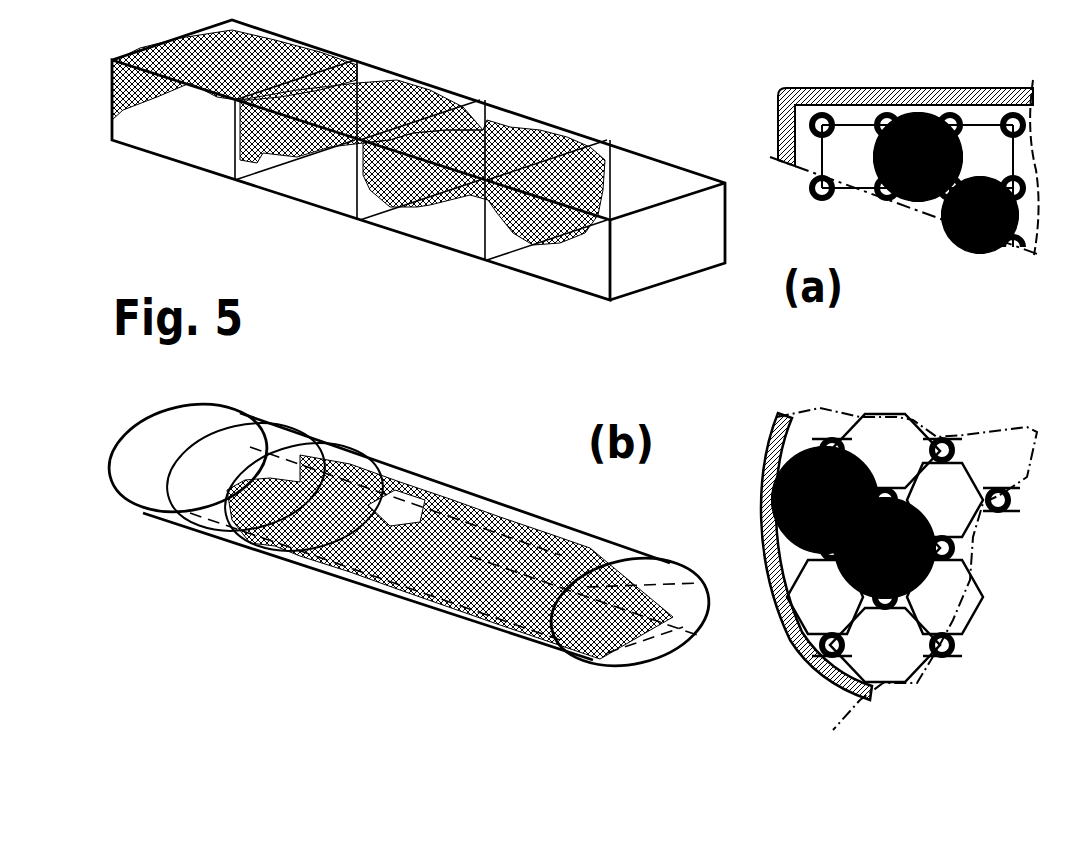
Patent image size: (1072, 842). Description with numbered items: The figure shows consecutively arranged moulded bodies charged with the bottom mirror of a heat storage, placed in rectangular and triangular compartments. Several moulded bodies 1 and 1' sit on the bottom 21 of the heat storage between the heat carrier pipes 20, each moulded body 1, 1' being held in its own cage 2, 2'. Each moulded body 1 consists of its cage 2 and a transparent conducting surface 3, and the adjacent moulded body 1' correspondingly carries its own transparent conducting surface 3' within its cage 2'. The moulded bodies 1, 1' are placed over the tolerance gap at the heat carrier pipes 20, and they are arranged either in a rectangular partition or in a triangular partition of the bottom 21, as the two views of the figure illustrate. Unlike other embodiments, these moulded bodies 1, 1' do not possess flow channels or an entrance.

The moulded body 1 is at (418, 227).
The moulded body 1' is at (408, 467).
The cage 2 is at (224, 369).
The cage 2' is at (347, 369).
The transparent conducting surface 3 is at (559, 344).
The transparent conducting surface 3' is at (498, 148).
The heat carrier pipe 20 is at (1017, 253).
The bottom 21 is at (778, 95).